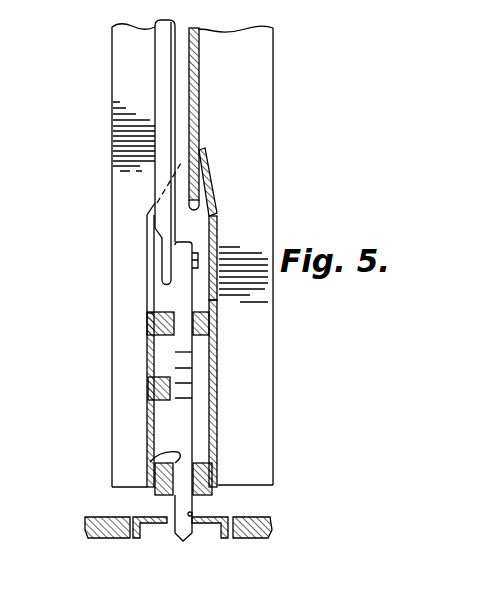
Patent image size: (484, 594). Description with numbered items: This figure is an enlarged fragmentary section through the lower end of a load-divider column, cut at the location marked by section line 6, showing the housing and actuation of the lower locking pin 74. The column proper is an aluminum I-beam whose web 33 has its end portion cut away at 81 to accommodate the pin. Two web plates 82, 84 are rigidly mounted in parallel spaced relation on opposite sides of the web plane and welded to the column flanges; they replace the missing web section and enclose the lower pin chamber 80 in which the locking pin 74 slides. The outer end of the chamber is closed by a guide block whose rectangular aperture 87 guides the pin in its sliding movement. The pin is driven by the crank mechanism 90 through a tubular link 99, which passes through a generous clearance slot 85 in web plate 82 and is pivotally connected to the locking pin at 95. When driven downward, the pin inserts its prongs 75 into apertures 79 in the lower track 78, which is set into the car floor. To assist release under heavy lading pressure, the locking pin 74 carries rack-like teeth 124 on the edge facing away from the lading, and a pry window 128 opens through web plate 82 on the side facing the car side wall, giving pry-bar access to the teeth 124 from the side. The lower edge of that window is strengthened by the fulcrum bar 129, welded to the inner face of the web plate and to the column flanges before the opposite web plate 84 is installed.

The section line 6- 6 is at (134, 83).
The web 33 is at (200, 64).
The tubular link 99 is at (163, 139).
The cut away end portion of web 81 is at (201, 211).
The pin chamber 80 is at (199, 228).
The clearance slot 85 is at (150, 247).
The pivotal connection 95 is at (165, 266).
The crank mechanism 90 is at (157, 325).
The second pry window 128 is at (150, 354).
The fulcrum bar 129 is at (150, 389).
The rack-like teeth 124 is at (184, 370).
The web plate 84 is at (218, 405).
The lower locking pin 74 is at (168, 421).
The web plate 82 is at (148, 447).
The rectangular aperture 87 is at (152, 460).
The aperture 79 is at (192, 512).
The prong 75 is at (170, 515).
The lower track 78 is at (162, 520).